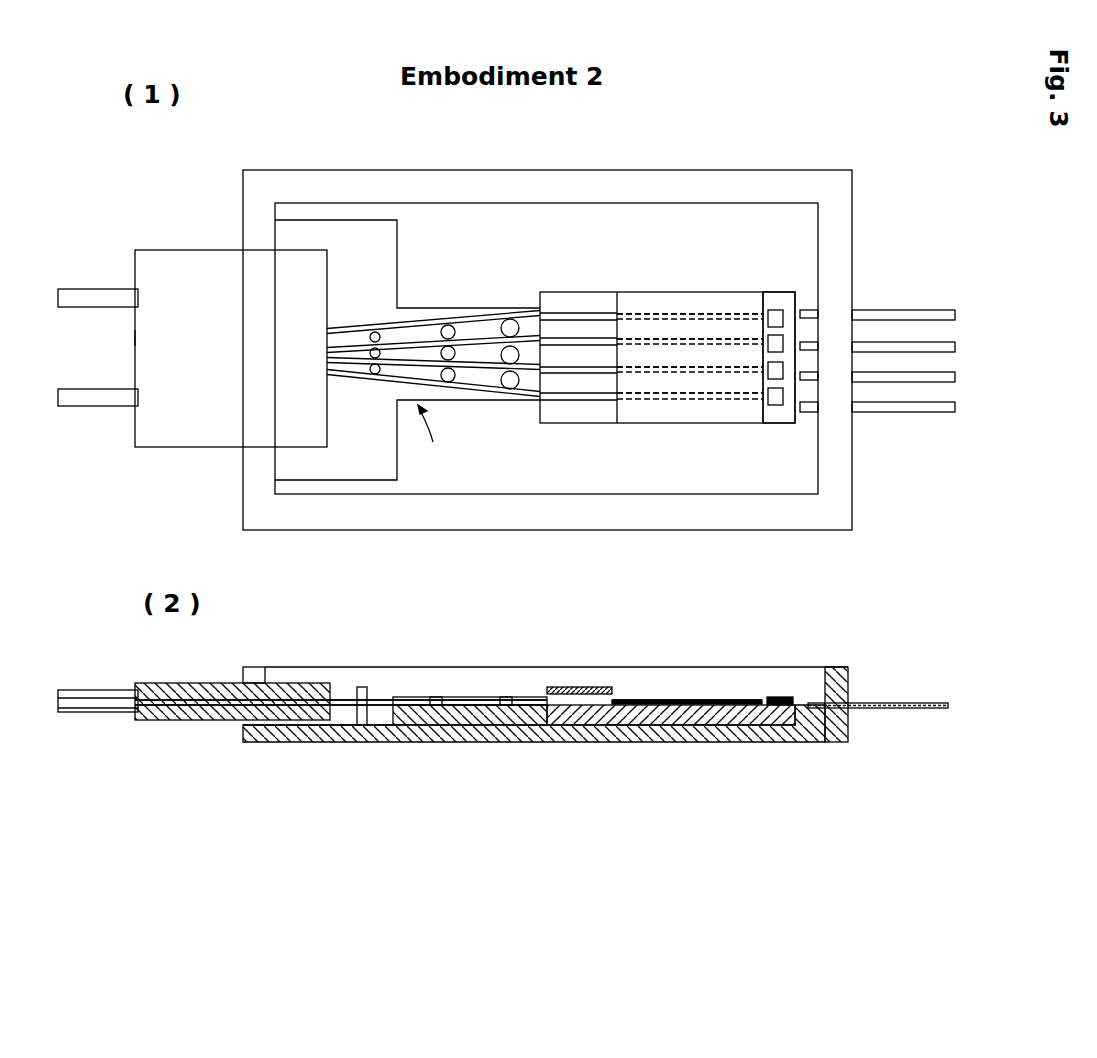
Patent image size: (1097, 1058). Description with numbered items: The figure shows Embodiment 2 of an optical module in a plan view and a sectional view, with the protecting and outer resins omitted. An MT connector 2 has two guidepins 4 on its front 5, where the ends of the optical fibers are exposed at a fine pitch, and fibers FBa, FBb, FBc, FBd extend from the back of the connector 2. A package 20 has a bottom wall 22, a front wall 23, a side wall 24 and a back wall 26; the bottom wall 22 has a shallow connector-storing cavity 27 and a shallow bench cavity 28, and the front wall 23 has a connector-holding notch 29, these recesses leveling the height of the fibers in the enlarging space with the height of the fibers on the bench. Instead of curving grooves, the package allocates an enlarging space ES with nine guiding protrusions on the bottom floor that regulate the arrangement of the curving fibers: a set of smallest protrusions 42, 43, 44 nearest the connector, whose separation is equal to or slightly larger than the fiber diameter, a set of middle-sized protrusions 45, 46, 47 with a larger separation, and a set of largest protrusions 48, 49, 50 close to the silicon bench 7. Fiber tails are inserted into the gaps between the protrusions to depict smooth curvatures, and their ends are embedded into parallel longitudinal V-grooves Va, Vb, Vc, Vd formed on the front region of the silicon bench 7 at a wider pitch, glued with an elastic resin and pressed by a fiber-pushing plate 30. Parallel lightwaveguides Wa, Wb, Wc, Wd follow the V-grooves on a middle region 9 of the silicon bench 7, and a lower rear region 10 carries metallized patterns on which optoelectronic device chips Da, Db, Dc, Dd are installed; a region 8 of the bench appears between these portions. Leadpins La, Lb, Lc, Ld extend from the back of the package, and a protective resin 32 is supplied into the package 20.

The MT connector 2 is at (193, 250).
The guidepins 4 is at (100, 296).
The front of the connector 5 is at (135, 338).
The silicon bench 7 is at (752, 318).
The waveguide substrate 8 is at (600, 423).
The middle region of the silicon bench 9 is at (670, 423).
The lower rear region of the silicon bench 10 is at (778, 423).
The package 20 is at (792, 228).
The bottom wall 22 is at (617, 227).
The front wall 23 is at (254, 208).
The side wall 24 is at (588, 186).
The back wall 26 is at (840, 512).
The connector-storing cavity 27 is at (348, 232).
The bench cavity 28 is at (693, 423).
The connector-holding notch 29 is at (272, 449).
The fiber-pushing plate 30 is at (572, 688).
The protective resin 32 is at (652, 684).
The guiding protrusion 42 is at (376, 332).
The guiding protrusion 43 is at (377, 348).
The guiding protrusion 44 is at (370, 374).
The guiding protrusion 45 is at (452, 325).
The guiding protrusion 46 is at (441, 358).
The guiding protrusion 47 is at (455, 380).
The guiding protrusion 48 is at (510, 319).
The guiding protrusion 49 is at (512, 346).
The guiding protrusion 50 is at (518, 386).
The optical fiber FBa is at (452, 318).
The optical fiber FBb is at (462, 342).
The optical fiber FBc is at (432, 368).
The optical fiber FBd is at (480, 392).
The V-groove Va is at (605, 312).
The V-groove Vb is at (628, 340).
The V-groove Vc is at (578, 375).
The V-groove Vd is at (600, 402).
The lightwaveguide Wa is at (682, 316).
The lightwaveguide Wb is at (710, 342).
The lightwaveguide Wc is at (710, 372).
The lightwaveguide Wd is at (740, 398).
The optoelectronic device chip Da is at (783, 318).
The optoelectronic device chip Db is at (783, 343).
The optoelectronic device chip Dc is at (785, 372).
The optoelectronic device chip Dd is at (785, 398).
The leadpin La is at (910, 312).
The leadpin Lb is at (952, 348).
The leadpin Lc is at (928, 380).
The leadpin Ld is at (948, 410).
The enlarging space ES is at (431, 434).